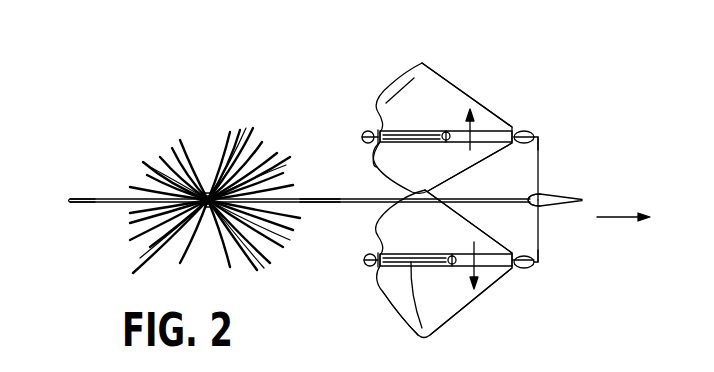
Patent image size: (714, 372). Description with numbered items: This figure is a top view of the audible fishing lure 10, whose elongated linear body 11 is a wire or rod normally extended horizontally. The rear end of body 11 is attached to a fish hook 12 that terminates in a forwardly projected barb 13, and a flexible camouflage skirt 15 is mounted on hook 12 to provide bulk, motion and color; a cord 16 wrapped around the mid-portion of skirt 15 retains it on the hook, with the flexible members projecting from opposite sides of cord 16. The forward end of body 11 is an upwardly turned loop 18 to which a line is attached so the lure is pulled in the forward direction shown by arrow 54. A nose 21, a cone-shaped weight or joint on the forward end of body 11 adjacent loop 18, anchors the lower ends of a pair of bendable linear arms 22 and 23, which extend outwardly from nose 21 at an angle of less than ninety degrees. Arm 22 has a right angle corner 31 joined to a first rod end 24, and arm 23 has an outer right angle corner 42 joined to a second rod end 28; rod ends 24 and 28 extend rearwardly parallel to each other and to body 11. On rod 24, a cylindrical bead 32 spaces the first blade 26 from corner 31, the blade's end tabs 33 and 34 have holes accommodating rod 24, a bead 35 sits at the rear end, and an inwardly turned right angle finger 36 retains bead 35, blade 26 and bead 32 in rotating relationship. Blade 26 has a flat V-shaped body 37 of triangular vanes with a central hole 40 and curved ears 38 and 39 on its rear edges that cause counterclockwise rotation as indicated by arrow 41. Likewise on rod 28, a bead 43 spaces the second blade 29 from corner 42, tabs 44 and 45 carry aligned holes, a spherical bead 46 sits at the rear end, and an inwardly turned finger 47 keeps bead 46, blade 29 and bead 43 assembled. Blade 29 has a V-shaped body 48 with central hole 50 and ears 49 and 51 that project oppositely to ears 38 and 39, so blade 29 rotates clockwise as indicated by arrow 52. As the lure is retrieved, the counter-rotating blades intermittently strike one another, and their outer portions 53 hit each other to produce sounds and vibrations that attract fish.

The audible fishing lure 10 is at (520, 56).
The elongated linear body 11 is at (328, 203).
The fish hook 12 is at (80, 202).
The barb 13 is at (125, 198).
The flexible camouflage skirt 15 is at (252, 133).
The cord 16 is at (208, 190).
The loop 18 is at (582, 200).
The nose 21 is at (547, 198).
The first arm 22 is at (543, 236).
The second arm 23 is at (545, 148).
The first rod end 24 is at (411, 263).
The first blade 26 is at (447, 337).
The second rod end 28 is at (418, 131).
The second blade 29 is at (468, 86).
The right angle corner 31 is at (539, 263).
The cylindrical bead 32 is at (527, 272).
The end tab 33 is at (517, 257).
The end tab 34 is at (373, 270).
The bead 35 is at (367, 256).
The right angle finger 36 is at (358, 261).
The V-shaped body 37 is at (457, 227).
The ear 38 is at (400, 314).
The ear 39 is at (390, 210).
The central hole 40 is at (448, 266).
The arrow 41 is at (480, 268).
The outer right angle corner 42 is at (540, 137).
The bead 43 is at (530, 132).
The tab 44 is at (523, 131).
The tab 45 is at (377, 128).
The spherical bead 46 is at (366, 143).
The finger 47 is at (360, 136).
The V-shaped body 48 is at (448, 98).
The ear 49 is at (383, 176).
The central hole 50 is at (445, 141).
The ear 51 is at (400, 85).
The arrow 52 is at (473, 146).
The outer portions 53 is at (444, 184).
The arrow 54 is at (612, 218).